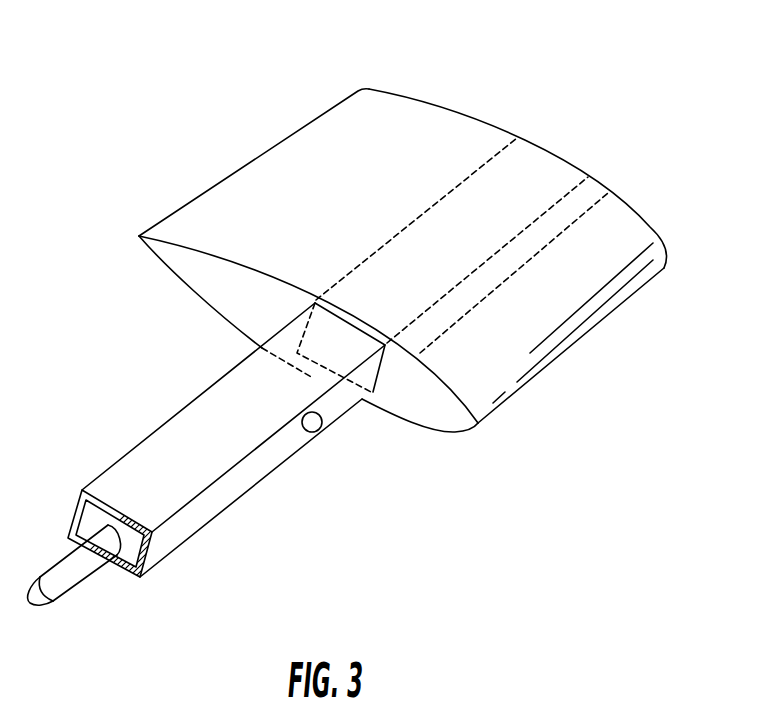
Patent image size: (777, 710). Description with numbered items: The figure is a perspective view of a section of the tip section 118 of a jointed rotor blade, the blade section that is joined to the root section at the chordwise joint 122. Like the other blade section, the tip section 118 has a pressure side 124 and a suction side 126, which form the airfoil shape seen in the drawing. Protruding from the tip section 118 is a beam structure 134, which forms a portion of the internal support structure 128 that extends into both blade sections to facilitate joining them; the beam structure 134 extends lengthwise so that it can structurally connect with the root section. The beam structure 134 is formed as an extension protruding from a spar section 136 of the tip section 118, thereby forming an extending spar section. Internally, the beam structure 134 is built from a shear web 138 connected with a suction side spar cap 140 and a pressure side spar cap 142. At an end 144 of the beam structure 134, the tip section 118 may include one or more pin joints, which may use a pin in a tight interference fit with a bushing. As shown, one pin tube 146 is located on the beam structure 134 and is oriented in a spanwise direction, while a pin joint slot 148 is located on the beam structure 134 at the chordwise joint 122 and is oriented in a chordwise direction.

The tip section 118 is at (245, 178).
The chordwise joint 122 is at (88, 293).
The pressure side 124 is at (222, 317).
The suction side 126 is at (417, 136).
The internal support structure 128 is at (245, 512).
The beam structure 134 is at (113, 478).
The spar section 136 is at (547, 175).
The shear web 138 is at (275, 455).
The suction side spar cap 140 is at (313, 378).
The pressure side spar cap 142 is at (350, 320).
The end of the beam structure 144 is at (158, 572).
The pin tube 146 is at (82, 577).
The pin joint slot 148 is at (312, 422).